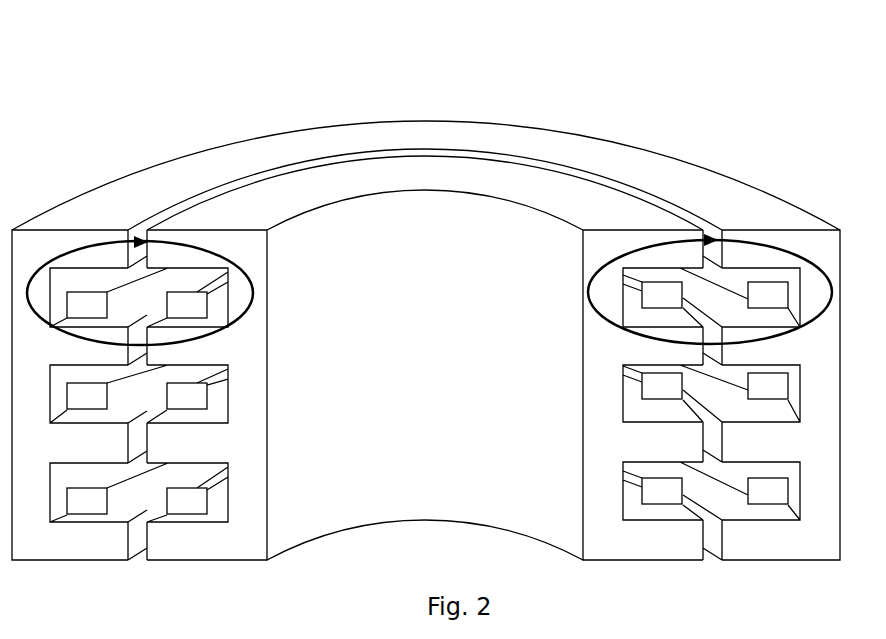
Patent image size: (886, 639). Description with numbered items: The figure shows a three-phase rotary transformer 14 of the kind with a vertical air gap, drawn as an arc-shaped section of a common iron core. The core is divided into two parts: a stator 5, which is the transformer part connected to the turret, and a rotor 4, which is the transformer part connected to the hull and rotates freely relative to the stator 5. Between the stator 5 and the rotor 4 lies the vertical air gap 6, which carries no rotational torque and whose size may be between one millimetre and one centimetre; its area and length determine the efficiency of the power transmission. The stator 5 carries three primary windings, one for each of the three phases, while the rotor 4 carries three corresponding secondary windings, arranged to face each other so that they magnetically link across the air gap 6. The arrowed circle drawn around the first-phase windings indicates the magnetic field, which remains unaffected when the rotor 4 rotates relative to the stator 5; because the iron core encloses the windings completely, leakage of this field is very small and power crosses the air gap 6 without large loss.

The three-phase rotary transformer 14 is at (481, 104).
The rotor 4 is at (596, 148).
The stator 5 is at (583, 208).
The vertical air gap 6 is at (700, 220).